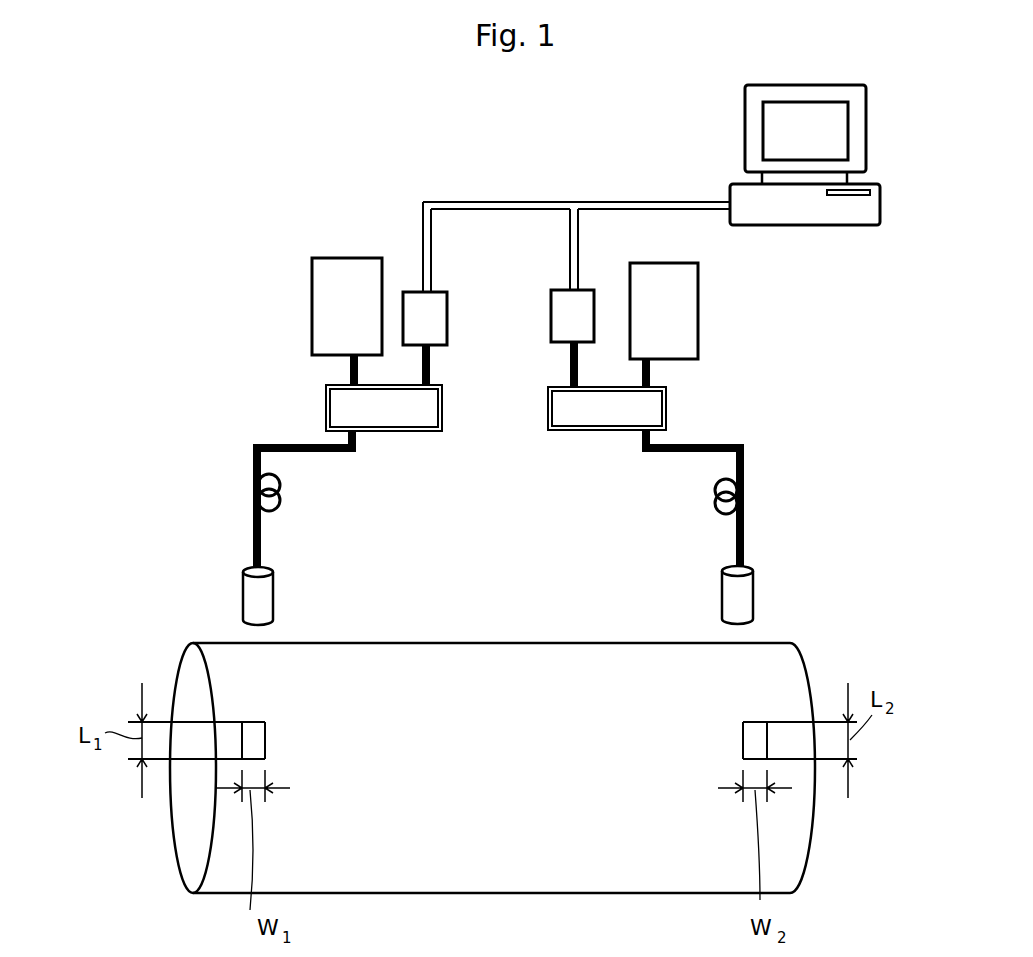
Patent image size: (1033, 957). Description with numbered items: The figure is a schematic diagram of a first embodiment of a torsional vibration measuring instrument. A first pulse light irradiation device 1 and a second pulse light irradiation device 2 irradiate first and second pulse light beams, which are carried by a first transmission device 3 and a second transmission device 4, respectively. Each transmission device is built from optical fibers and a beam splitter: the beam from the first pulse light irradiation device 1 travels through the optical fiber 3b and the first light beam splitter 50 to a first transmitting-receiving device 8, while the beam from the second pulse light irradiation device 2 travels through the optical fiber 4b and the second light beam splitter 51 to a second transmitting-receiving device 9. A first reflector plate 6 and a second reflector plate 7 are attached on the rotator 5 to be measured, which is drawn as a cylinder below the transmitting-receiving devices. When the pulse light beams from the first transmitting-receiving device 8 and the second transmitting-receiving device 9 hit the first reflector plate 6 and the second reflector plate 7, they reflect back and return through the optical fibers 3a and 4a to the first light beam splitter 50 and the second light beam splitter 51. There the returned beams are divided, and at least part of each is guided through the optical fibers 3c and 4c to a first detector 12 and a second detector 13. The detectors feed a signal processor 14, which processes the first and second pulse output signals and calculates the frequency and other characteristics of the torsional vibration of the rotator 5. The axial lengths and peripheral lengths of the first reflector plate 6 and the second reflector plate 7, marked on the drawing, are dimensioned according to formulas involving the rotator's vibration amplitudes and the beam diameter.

The first pulse light irradiation device 1 is at (312, 302).
The second pulse light irradiation device 2 is at (698, 288).
The first transmission device 3 is at (257, 497).
The optical fiber 3a is at (253, 468).
The optical fiber 3b is at (350, 372).
The optical fiber 3c is at (430, 360).
The second transmission device 4 is at (750, 498).
The optical fiber 4a is at (745, 455).
The optical fiber 4b is at (652, 373).
The optical fiber 4c is at (570, 370).
The rotator to be measured 5 is at (800, 853).
The first reflector plate 6 is at (265, 725).
The second reflector plate 7 is at (743, 735).
The first transmitting-receiving device 8 is at (243, 590).
The second transmitting-receiving device 9 is at (753, 588).
The first detector 12 is at (408, 292).
The second detector 13 is at (590, 290).
The signal processor 14 is at (866, 125).
The first light beam splitter 50 is at (326, 410).
The second light beam splitter 51 is at (666, 407).